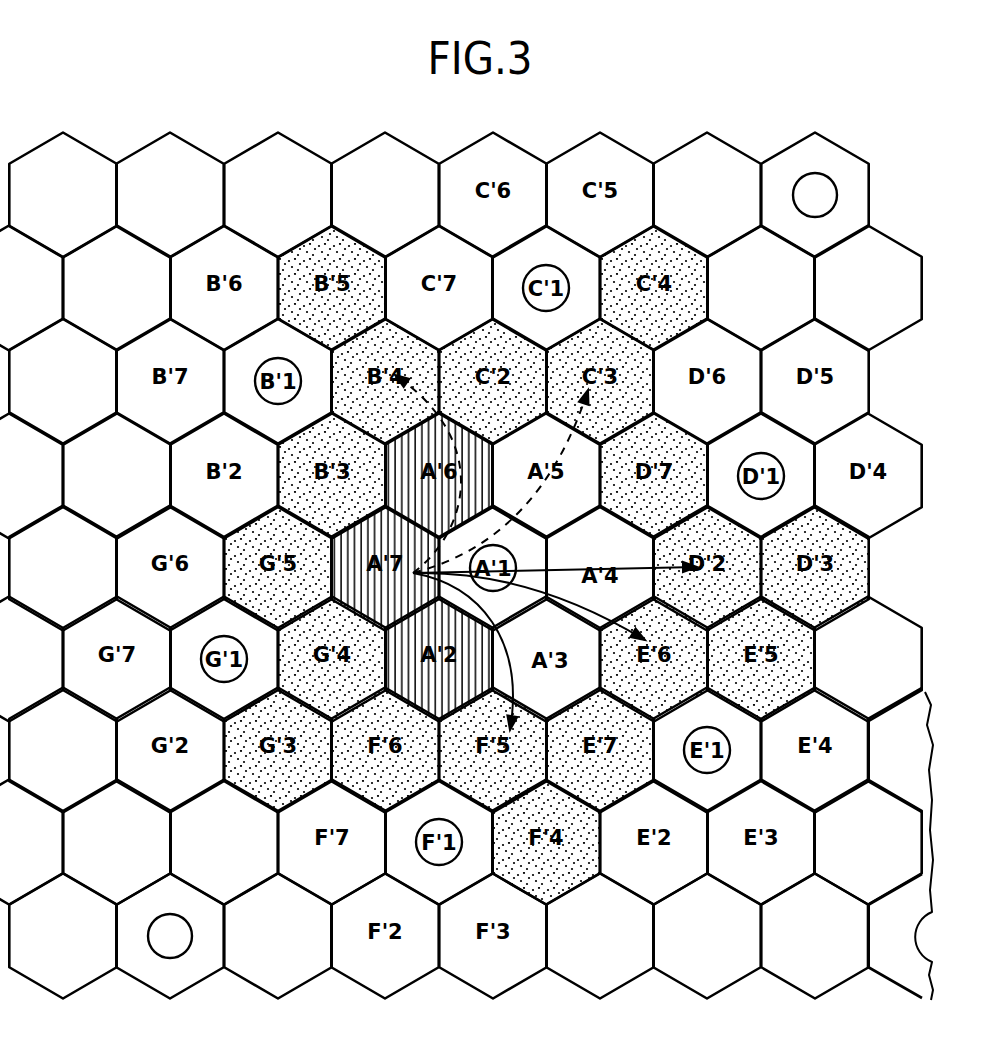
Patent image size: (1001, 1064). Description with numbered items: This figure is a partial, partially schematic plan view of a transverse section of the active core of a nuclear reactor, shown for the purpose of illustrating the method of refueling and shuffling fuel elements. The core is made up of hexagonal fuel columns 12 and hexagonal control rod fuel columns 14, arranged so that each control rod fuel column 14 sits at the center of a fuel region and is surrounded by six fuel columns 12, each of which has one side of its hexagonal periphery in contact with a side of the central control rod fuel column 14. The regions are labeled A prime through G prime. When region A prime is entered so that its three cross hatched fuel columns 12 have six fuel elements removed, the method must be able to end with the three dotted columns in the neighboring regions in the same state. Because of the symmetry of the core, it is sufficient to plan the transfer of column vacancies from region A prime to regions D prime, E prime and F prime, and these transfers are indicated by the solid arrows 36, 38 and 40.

The fuel column 12 is at (627, 552).
The control rod fuel column 14 is at (541, 559).
The solid arrow 36 is at (560, 566).
The solid arrow 38 is at (598, 610).
The solid arrow 40 is at (527, 678).